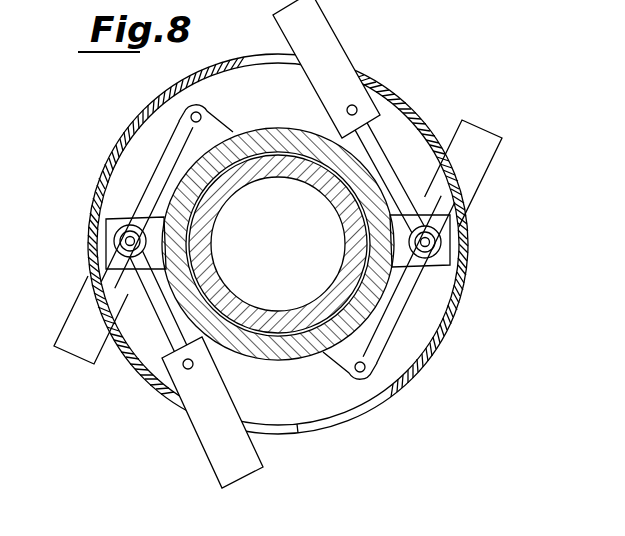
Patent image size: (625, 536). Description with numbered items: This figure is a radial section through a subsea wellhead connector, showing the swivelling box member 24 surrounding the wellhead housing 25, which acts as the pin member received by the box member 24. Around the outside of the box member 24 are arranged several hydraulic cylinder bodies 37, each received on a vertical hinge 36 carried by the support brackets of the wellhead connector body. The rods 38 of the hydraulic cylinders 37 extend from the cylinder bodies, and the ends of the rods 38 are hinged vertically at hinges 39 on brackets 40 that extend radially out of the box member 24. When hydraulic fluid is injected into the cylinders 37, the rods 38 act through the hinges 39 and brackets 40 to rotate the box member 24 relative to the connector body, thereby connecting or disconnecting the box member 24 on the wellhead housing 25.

The box member 24 is at (280, 126).
The wellhead housing 25 is at (273, 160).
The vertical hinge 36 is at (358, 106).
The hydraulic cylinder body 37 is at (320, 33).
The rod 38 is at (387, 147).
The vertical hinge 39 is at (441, 240).
The bracket 40 is at (106, 158).